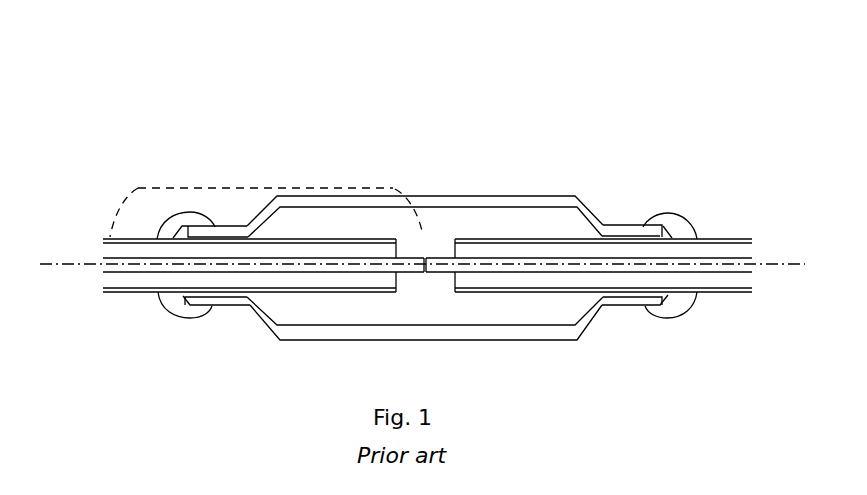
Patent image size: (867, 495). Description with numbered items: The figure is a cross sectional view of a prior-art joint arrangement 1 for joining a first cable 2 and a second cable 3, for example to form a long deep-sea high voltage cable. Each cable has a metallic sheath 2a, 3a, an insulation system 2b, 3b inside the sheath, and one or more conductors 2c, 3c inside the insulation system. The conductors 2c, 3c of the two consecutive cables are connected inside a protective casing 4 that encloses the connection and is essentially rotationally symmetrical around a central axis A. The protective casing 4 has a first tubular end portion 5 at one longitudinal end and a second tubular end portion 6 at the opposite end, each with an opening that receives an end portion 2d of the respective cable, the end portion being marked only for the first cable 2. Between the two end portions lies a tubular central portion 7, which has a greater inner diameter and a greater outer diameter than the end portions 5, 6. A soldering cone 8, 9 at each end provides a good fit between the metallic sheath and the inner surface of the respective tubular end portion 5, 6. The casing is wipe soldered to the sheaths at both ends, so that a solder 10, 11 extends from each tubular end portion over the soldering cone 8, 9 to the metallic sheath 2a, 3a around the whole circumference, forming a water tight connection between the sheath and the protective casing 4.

The joint arrangement 1 is at (527, 80).
The central axis A is at (80, 262).
The first cable 2 is at (143, 238).
The metallic sheath 2a is at (150, 288).
The insulation system 2b is at (129, 280).
The conductor 2c is at (105, 273).
The end portion 2d is at (267, 188).
The second cable 3 is at (733, 238).
The metallic sheath 3a is at (743, 290).
The insulation system 3b is at (720, 282).
The conductor 3c is at (690, 272).
The protective casing 4 is at (475, 195).
The first tubular end portion 5 is at (233, 230).
The second tubular end portion 6 is at (632, 230).
The tubular central portion 7 is at (492, 340).
The soldering cone 8 is at (190, 305).
The soldering cone 9 is at (672, 232).
The solder 10 is at (205, 310).
The solder 11 is at (692, 230).